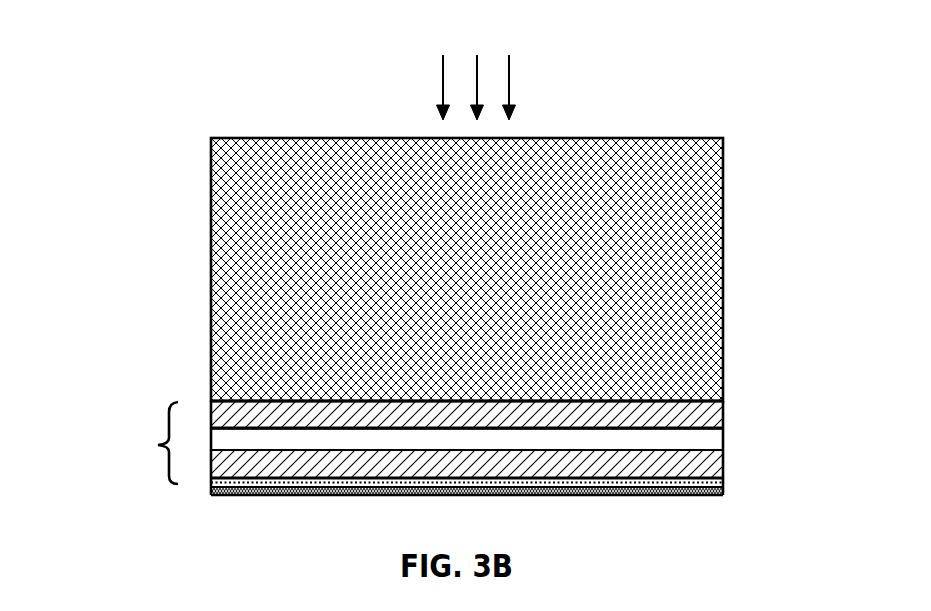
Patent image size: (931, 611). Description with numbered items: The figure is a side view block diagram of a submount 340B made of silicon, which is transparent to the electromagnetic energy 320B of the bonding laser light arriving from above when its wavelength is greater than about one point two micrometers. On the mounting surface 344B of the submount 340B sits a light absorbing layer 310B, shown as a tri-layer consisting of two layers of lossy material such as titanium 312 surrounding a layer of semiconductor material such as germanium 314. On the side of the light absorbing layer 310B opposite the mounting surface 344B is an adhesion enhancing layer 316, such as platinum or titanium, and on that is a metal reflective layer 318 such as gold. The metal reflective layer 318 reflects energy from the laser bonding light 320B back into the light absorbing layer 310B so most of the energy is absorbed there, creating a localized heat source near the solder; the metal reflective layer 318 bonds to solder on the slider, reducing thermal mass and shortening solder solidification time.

The electromagnetic energy 320B is at (495, 47).
The submount 340B is at (240, 261).
The mounting surface 344B is at (605, 400).
The light absorbing layer 310B is at (121, 443).
The layer of lossy material 312 is at (723, 410).
The layer of semiconductor material 314 is at (708, 438).
The adhesion enhancing layer 316 is at (725, 482).
The metal reflective layer 318 is at (724, 493).